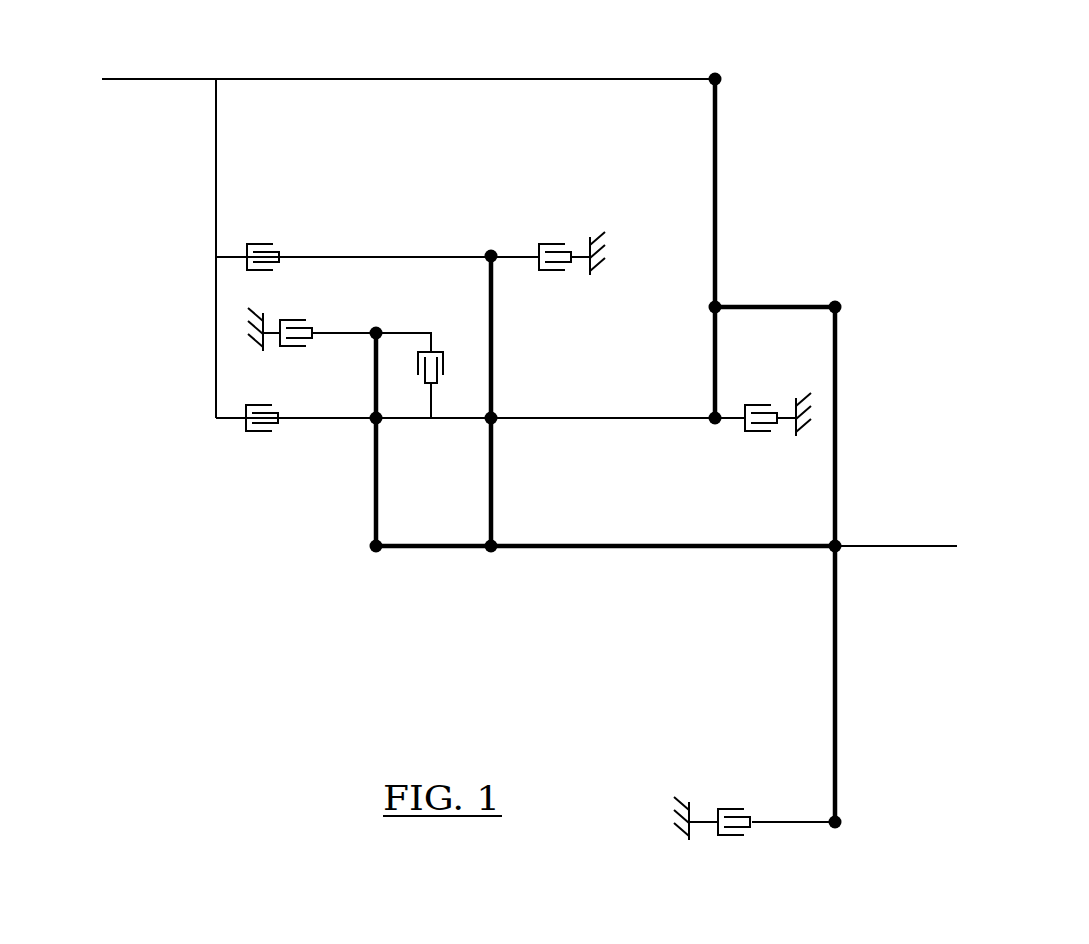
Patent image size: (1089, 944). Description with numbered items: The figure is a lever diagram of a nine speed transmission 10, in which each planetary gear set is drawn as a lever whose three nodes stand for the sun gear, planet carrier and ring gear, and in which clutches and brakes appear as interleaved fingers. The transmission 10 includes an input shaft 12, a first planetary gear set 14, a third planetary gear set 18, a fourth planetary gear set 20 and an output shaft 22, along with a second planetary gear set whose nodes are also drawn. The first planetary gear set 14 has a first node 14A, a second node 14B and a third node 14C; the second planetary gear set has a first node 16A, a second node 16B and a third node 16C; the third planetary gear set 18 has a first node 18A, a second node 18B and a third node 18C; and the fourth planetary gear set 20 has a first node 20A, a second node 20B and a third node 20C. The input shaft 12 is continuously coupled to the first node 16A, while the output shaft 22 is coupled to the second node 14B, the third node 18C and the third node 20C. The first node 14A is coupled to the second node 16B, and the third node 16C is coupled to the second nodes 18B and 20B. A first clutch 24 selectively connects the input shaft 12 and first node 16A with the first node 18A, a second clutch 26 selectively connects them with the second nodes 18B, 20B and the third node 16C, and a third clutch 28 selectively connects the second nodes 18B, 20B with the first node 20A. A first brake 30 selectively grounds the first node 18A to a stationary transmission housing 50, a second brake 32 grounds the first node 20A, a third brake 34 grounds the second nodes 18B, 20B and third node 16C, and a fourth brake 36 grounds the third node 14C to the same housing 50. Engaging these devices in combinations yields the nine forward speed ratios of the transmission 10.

The nine speed transmission 10 is at (993, 124).
The input shaft 12 is at (122, 82).
The first planetary gear set 14 is at (822, 846).
The first node of first planetary gear set 14A is at (845, 308).
The second node of first planetary gear set 14B is at (830, 551).
The third node of first planetary gear set 14C is at (843, 822).
The first node of second planetary gear set 16A is at (725, 80).
The second node of second planetary gear set 16B is at (708, 308).
The third node of second planetary gear set 16C is at (713, 425).
The third planetary gear set 18 is at (527, 571).
The first node of third planetary gear set 18A is at (488, 248).
The second node of third planetary gear set 18B is at (495, 422).
The third node of third planetary gear set 18C is at (493, 551).
The fourth planetary gear set 20 is at (349, 571).
The first node of fourth planetary gear set 20A is at (377, 325).
The second node of fourth planetary gear set 20B is at (370, 422).
The third node of fourth planetary gear set 20C is at (378, 551).
The output shaft 22 is at (920, 548).
The first clutch 24 is at (262, 243).
The second clutch 26 is at (258, 430).
The third clutch 28 is at (445, 368).
The first brake 30 is at (548, 244).
The second brake 32 is at (290, 320).
The third brake 34 is at (767, 402).
The fourth brake 36 is at (728, 806).
The transmission housing 50 is at (598, 236).